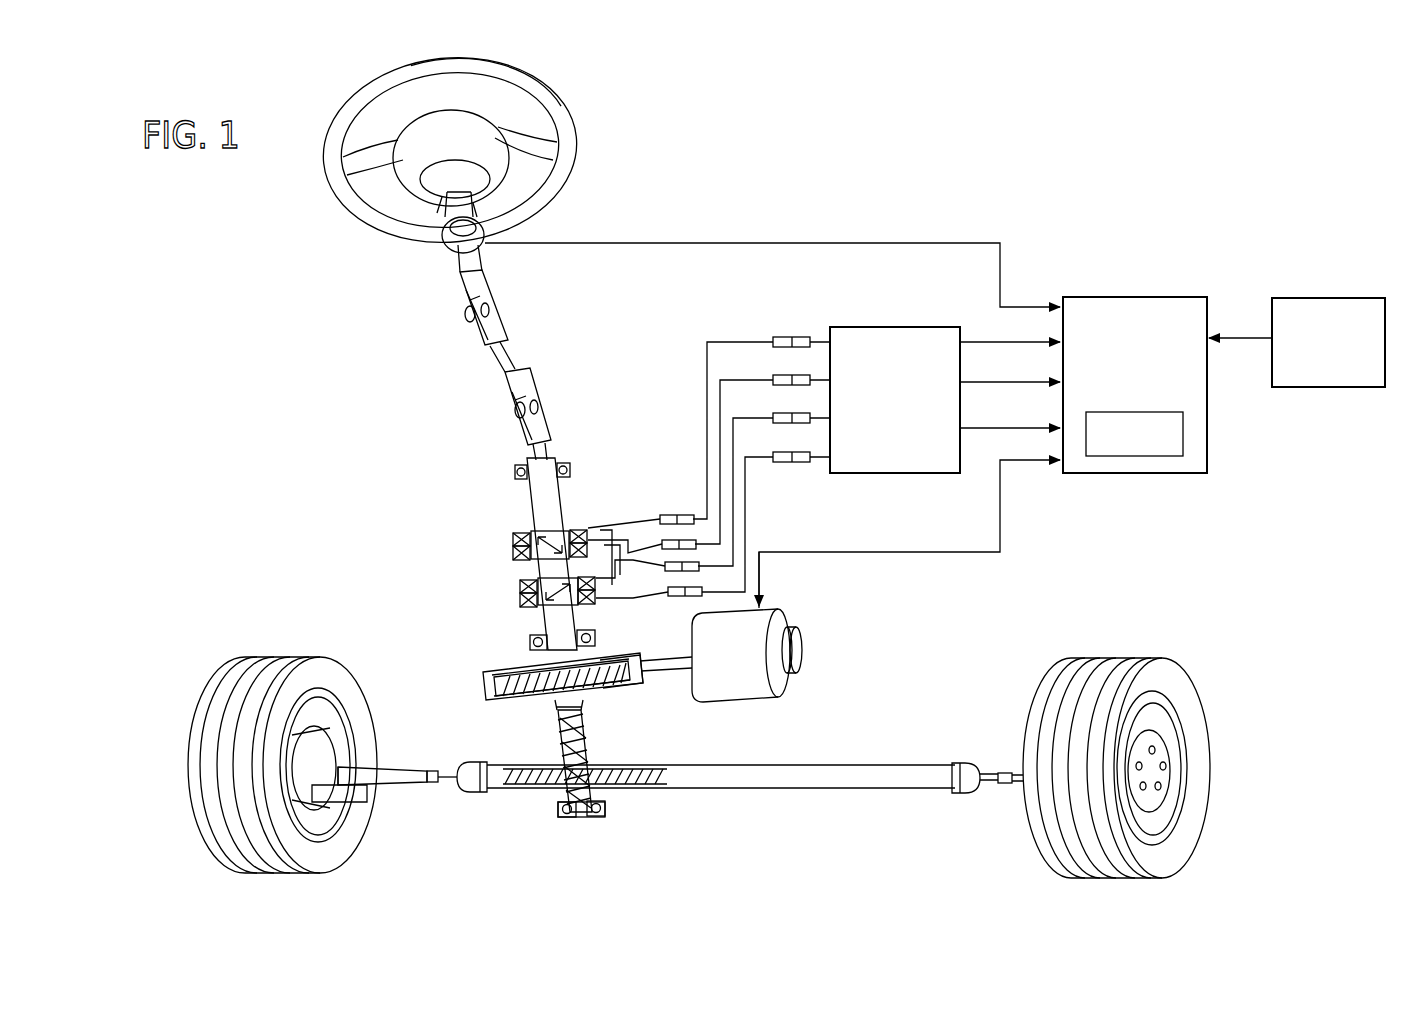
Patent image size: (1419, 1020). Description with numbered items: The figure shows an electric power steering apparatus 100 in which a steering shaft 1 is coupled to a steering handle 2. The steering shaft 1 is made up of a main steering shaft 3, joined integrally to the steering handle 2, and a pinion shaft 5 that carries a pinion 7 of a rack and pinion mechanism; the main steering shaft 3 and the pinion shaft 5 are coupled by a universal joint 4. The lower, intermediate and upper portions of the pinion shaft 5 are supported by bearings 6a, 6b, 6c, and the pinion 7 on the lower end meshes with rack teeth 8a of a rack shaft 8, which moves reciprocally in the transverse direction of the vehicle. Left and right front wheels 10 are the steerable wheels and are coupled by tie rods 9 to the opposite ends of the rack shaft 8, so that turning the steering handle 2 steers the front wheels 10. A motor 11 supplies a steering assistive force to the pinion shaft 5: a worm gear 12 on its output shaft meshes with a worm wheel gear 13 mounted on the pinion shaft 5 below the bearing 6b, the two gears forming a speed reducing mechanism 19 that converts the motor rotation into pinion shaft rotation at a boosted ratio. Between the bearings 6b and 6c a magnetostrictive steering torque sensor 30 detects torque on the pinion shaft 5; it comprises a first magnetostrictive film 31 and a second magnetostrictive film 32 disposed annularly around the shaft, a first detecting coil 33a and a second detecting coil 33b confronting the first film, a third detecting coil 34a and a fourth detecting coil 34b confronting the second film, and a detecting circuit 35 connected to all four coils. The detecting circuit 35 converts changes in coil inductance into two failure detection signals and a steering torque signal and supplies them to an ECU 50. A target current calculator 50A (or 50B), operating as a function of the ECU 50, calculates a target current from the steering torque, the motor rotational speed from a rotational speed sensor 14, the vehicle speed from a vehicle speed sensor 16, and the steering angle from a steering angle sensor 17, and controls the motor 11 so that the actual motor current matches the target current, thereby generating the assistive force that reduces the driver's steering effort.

The steering shaft 1 is at (458, 426).
The steering handle 2 is at (572, 132).
The main steering shaft 3 is at (458, 268).
The universal joint 4 is at (488, 350).
The pinion shaft 5 is at (557, 706).
The bearing 6a is at (558, 815).
The bearing 6b is at (597, 640).
The bearing 6c is at (515, 474).
The pinion 7 is at (585, 760).
The rack shaft 8 is at (718, 801).
The rack teeth 8a is at (628, 790).
The tie rod 9 is at (402, 783).
The front wheel 10 is at (325, 680).
The motor 11 is at (752, 692).
The worm gear 12 is at (605, 682).
The worm wheel gear 13 is at (488, 692).
The rotational speed sensor 14 is at (801, 648).
The vehicle speed sensor 16 is at (1352, 298).
The steering angle sensor 17 is at (485, 256).
The speed reducing mechanism 19 is at (480, 669).
The magnetostrictive steering torque sensor 30 is at (505, 573).
The first magnetostrictive film 31 is at (516, 532).
The second magnetostrictive film 32 is at (521, 614).
The first detecting coil 33a is at (513, 540).
The second detecting coil 33b is at (538, 530).
The third detecting coil 34a is at (520, 590).
The fourth detecting coil 34b is at (555, 612).
The detecting circuit 35 is at (937, 327).
The ECU 50 is at (988, 432).
The target current calculator 50A is at (1152, 461).
The target current calculator 50B is at (1110, 456).
The electric power steering apparatus 100 is at (767, 192).